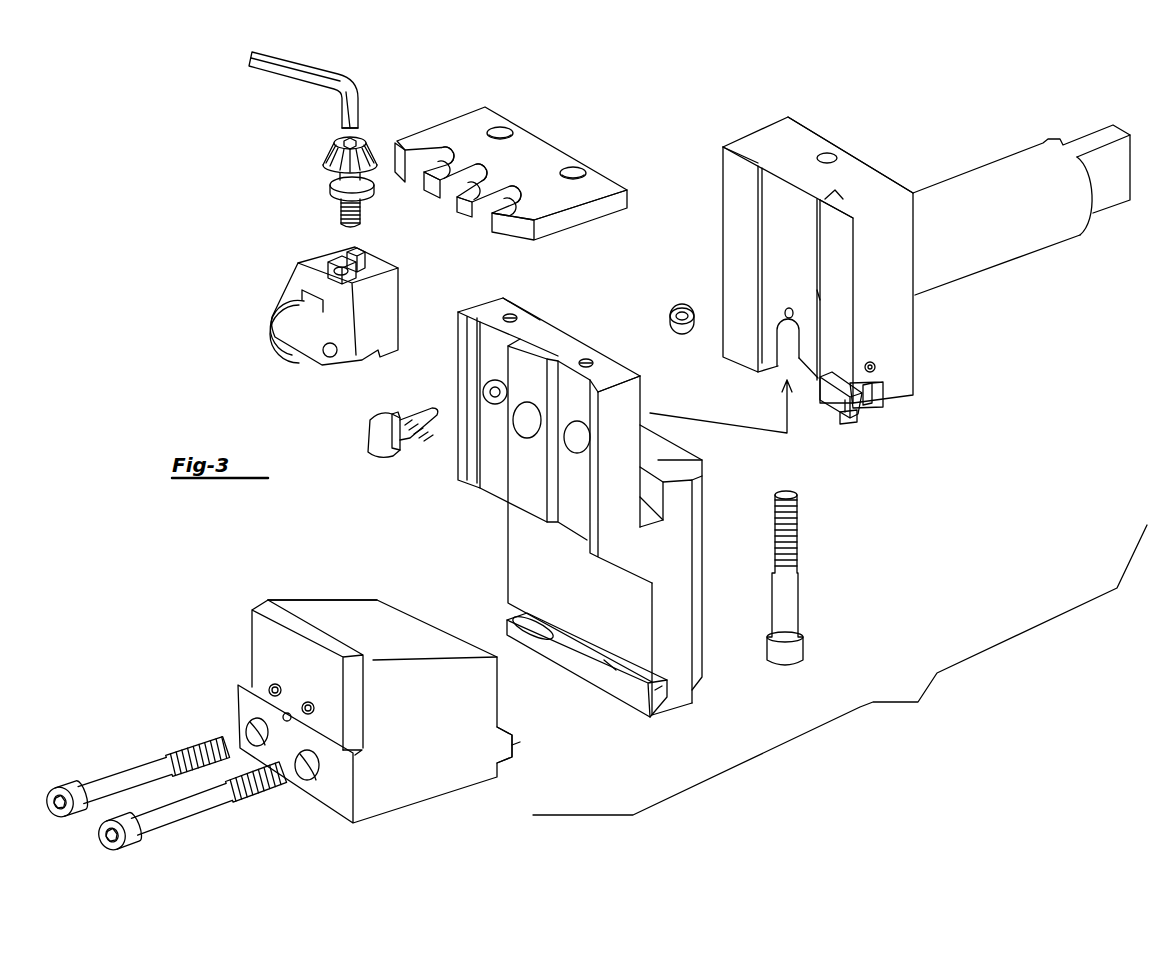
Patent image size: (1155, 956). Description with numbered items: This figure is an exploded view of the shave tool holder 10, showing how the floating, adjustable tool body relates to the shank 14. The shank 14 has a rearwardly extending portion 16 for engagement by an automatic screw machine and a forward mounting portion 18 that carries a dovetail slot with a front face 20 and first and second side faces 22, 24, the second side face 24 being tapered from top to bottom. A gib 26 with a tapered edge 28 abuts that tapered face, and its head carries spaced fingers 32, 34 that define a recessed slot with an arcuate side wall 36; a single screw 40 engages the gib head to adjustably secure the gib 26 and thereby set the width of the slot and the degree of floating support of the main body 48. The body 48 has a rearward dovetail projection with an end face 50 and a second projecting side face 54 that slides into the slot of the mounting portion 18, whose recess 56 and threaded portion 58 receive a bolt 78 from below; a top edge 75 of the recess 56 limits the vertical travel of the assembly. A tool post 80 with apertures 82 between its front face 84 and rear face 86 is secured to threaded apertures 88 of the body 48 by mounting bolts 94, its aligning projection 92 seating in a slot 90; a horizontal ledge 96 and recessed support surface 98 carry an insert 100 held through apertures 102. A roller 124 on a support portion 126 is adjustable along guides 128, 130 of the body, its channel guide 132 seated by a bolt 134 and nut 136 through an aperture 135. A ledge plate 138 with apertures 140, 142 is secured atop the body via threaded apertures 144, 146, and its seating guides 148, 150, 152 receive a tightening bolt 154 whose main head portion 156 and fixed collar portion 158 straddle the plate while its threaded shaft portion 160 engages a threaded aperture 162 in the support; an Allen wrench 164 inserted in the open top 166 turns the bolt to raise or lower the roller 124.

The vise base 10 is at (840, 670).
The shank 14 is at (918, 145).
The rearwardly extending portion 16 is at (1012, 255).
The mounting portion 18 is at (768, 118).
The front face 20 is at (827, 150).
The first extending side face 22 is at (752, 140).
The second extending side face 24 is at (837, 195).
The gib 26 is at (830, 420).
The tapered edge 28 is at (815, 290).
The finger 32 is at (860, 418).
The finger 34 is at (883, 396).
The arcuate extending side wall 36 is at (875, 380).
The screw 40 is at (862, 432).
The main body 48 is at (575, 310).
The end face 50 is at (678, 445).
The second projecting side face 54 is at (702, 465).
The recess 56 is at (798, 360).
The threaded portion 58 is at (835, 140).
The top edge 75 is at (783, 312).
The bolt 78 is at (795, 620).
The tool post 80 is at (320, 590).
The apertures 82 is at (240, 727).
The front face 84 is at (348, 798).
The rear face 86 is at (500, 722).
The interiorly threaded apertures 88 is at (507, 615).
The slot 90 is at (650, 717).
The aligning projection 92 is at (508, 740).
The mounting bolts 94 is at (150, 815).
The horizontally extending ledge 96 is at (367, 752).
The recessed support surface 98 is at (373, 677).
The insert 100 is at (270, 655).
The apertures 102 is at (308, 702).
The roller 124 is at (280, 358).
The support portion 126 is at (382, 300).
The guide 128 is at (513, 312).
The guide 130 is at (615, 385).
The channel guide 132 is at (358, 258).
The bolt 134 is at (372, 432).
The aperture 135 is at (480, 392).
The nut 136 is at (685, 300).
The ledge plate 138 is at (538, 128).
The aperture 140 is at (498, 125).
The aperture 142 is at (580, 166).
The threaded aperture 144 is at (540, 290).
The threaded aperture 146 is at (590, 360).
The seating guide 148 is at (435, 150).
The seating guide 150 is at (478, 185).
The seating guide 152 is at (540, 198).
The threaded tightening bolt 154 is at (312, 180).
The main head portion 156 is at (334, 142).
The fixed collar portion 158 is at (330, 184).
The threaded shaft portion 160 is at (340, 215).
The interiorly threaded aperture 162 is at (328, 262).
The Allen wrench 164 is at (300, 75).
The open top 166 is at (352, 128).